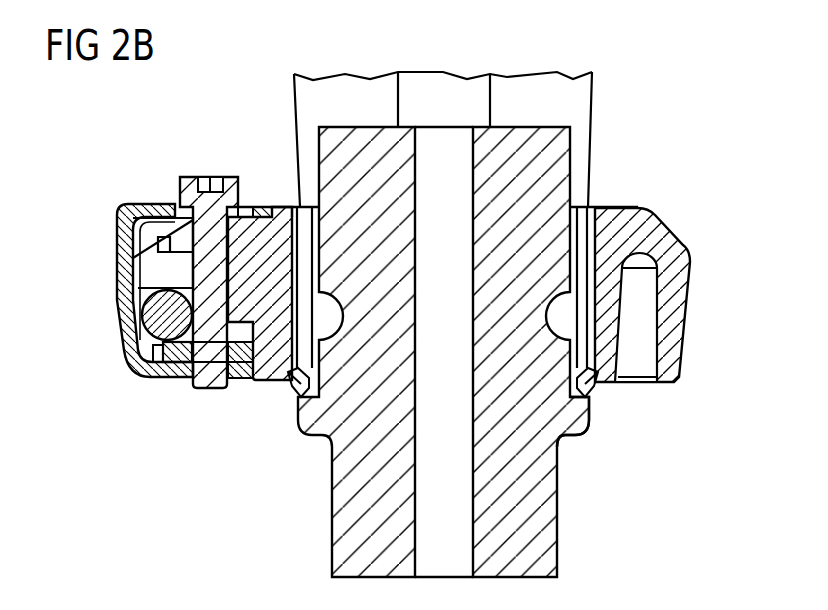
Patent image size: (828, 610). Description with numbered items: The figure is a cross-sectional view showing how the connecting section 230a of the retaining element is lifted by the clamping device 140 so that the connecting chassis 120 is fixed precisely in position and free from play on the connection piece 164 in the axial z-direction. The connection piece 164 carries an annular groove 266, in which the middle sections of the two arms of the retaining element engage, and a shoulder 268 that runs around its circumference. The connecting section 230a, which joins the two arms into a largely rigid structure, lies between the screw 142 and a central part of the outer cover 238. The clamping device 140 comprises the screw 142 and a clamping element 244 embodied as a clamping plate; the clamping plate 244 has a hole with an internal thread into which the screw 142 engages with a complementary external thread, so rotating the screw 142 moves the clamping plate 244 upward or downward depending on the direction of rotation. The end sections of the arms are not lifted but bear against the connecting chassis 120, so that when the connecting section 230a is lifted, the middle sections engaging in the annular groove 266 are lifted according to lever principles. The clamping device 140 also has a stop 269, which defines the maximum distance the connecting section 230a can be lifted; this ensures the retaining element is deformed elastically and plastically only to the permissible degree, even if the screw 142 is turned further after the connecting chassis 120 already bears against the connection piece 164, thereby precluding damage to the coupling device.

The connecting chassis 120 is at (263, 385).
The clamping device 140 is at (141, 267).
The screw 142 is at (168, 185).
The connection piece 164 is at (545, 511).
The connecting section 230a is at (143, 310).
The outer cover 238 is at (119, 211).
The clamping plate 244 is at (177, 377).
The annular groove 266 is at (555, 328).
The shoulder 268 is at (590, 411).
The stop 269 is at (158, 245).